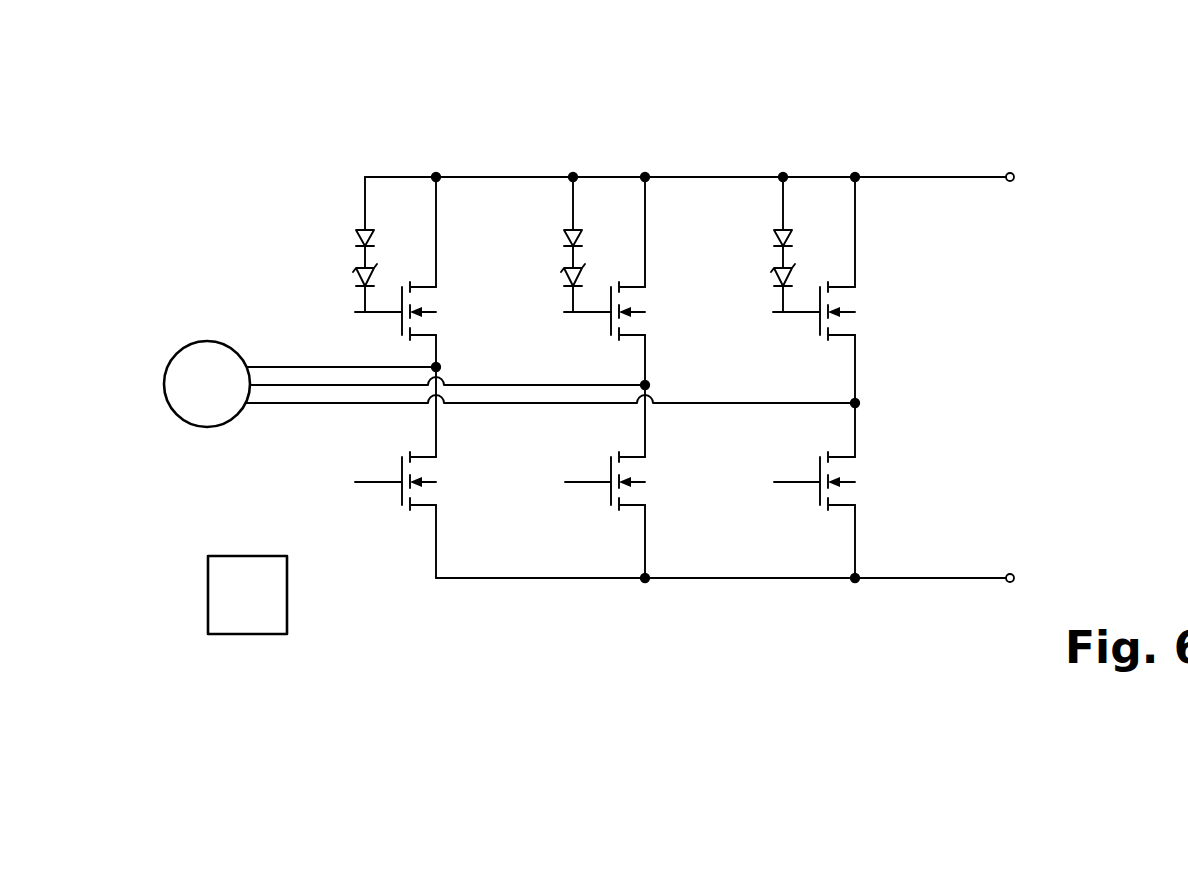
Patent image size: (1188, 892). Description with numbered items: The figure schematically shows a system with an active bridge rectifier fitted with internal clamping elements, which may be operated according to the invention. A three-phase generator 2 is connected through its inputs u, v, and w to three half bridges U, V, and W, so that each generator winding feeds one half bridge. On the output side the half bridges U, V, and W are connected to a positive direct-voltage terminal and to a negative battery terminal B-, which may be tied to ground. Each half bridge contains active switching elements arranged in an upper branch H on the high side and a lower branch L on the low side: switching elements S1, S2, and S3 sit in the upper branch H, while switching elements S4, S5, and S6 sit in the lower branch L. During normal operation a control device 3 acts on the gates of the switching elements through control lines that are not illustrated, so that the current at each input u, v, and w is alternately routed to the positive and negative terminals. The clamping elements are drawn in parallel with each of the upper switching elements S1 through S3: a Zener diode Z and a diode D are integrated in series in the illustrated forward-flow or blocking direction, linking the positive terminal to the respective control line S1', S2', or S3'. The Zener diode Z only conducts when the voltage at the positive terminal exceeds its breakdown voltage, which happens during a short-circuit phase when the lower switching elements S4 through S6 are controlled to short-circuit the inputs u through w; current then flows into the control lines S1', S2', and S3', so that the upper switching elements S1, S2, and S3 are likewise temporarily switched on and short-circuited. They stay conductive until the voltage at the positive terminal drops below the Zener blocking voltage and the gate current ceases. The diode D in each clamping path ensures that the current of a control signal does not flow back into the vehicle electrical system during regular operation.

The generator 2 is at (208, 340).
The control device 3 is at (247, 555).
The input u is at (295, 365).
The input v is at (275, 387).
The input w is at (312, 405).
The half bridge U is at (436, 150).
The half bridge V is at (645, 150).
The half bridge W is at (855, 150).
The diode D is at (340, 237).
The Zener diode Z is at (340, 270).
The active switching element S1 is at (467, 329).
The control line S1' is at (381, 343).
The active switching element S2 is at (676, 329).
The control line S2' is at (589, 343).
The active switching element S3 is at (886, 329).
The control line S3' is at (799, 343).
The active switching element S4 is at (463, 507).
The active switching element S5 is at (670, 507).
The active switching element S6 is at (882, 507).
The negative battery terminal B- is at (1012, 573).
The upper branch H is at (945, 282).
The lower branch L is at (945, 483).